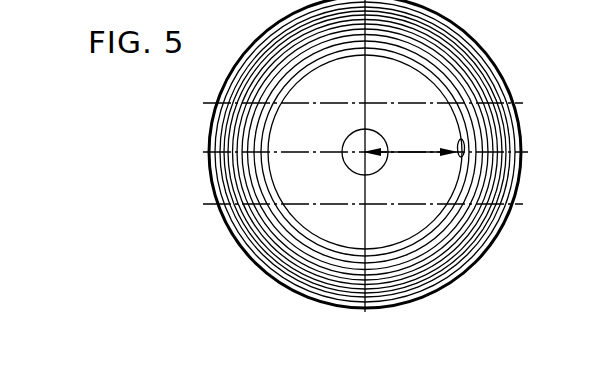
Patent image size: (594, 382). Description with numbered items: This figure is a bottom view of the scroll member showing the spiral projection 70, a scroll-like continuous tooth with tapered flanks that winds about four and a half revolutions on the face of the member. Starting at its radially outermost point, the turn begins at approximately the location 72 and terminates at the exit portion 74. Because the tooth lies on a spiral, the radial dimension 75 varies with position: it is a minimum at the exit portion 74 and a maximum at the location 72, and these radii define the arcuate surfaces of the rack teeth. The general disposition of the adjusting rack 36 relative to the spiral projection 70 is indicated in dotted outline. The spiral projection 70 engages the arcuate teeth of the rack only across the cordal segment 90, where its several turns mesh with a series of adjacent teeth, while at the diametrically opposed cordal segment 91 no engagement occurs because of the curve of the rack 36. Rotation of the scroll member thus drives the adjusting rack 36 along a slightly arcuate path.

The adjusting rack 36 is at (213, 105).
The spiral projection 70 is at (506, 212).
The starting location of the spiral 72 is at (262, 272).
The exit portion 74 is at (459, 140).
The radial dimension 75 is at (408, 163).
The cordal segment of engagement 90 is at (197, 107).
The diametrically opposed cordal segment 91 is at (530, 103).